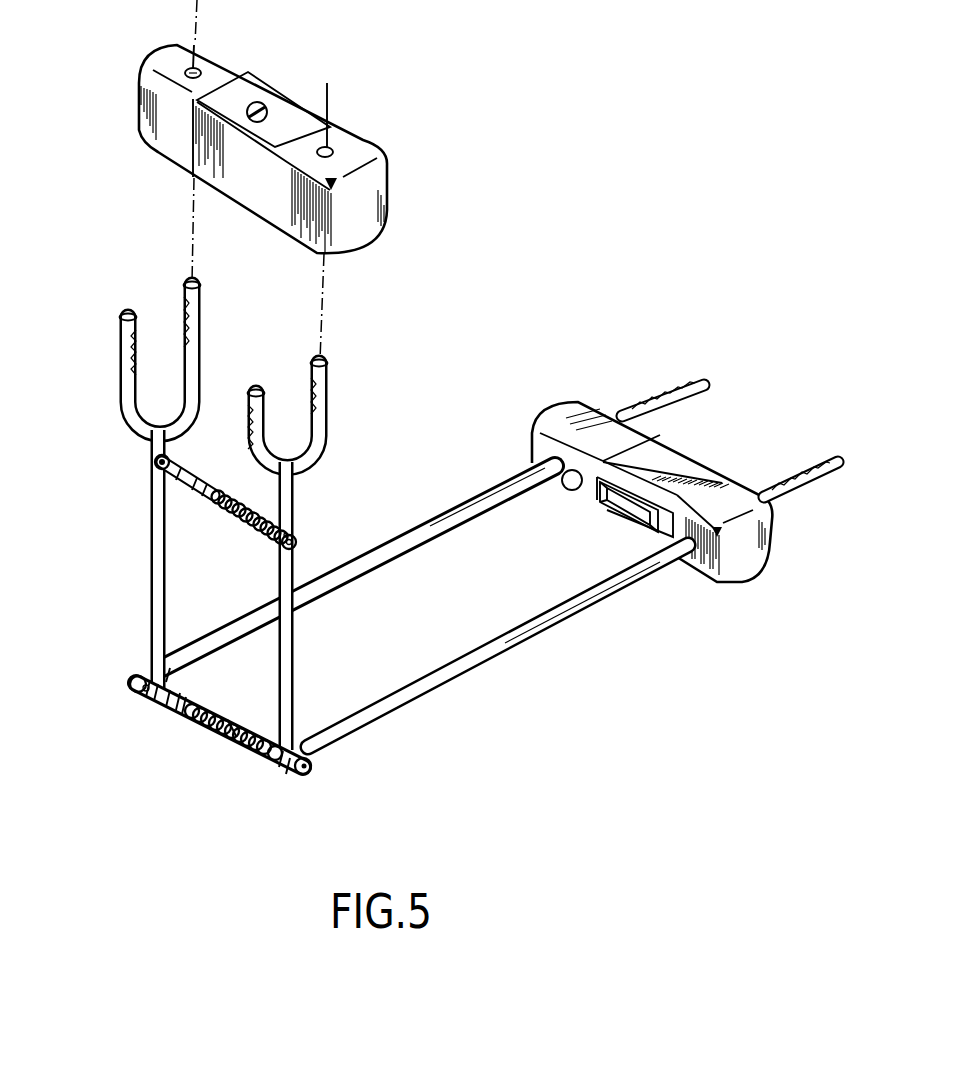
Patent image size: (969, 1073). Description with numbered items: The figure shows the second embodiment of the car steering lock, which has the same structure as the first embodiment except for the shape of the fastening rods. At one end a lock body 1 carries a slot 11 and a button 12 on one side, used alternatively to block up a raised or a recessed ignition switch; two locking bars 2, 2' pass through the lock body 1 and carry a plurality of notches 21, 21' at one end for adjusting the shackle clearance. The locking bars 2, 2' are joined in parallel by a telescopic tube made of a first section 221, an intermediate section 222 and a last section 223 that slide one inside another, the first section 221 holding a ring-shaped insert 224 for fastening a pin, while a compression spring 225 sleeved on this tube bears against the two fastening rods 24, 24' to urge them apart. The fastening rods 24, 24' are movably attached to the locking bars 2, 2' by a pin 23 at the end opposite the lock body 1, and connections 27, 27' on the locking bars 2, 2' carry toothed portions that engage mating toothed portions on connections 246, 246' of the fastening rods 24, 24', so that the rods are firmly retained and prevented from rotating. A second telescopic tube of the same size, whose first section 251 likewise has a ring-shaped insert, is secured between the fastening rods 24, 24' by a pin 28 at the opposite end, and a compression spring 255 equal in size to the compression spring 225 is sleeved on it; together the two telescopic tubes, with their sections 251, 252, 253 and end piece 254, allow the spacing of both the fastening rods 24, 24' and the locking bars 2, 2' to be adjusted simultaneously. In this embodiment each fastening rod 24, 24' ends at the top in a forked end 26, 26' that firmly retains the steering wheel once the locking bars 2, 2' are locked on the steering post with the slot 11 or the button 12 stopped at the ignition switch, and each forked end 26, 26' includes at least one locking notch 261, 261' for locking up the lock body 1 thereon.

The lock body 1 is at (347, 129).
The locking bar 2 is at (498, 646).
The locking bar 2' is at (358, 563).
The slot 11 is at (610, 528).
The button 12 is at (572, 491).
The notches 21 is at (801, 427).
The notches 21' is at (663, 358).
The pin 23 is at (309, 770).
The fastening rod 24 is at (320, 606).
The fastening rod 24' is at (111, 560).
The forked end 26 is at (322, 406).
The forked end 26' is at (160, 328).
The connection 27 is at (296, 804).
The connection 27' is at (169, 699).
The pin 28 is at (294, 530).
The first section 221 is at (187, 718).
The intermediate section 222 is at (220, 738).
The last section 223 is at (257, 755).
The ring-shaped insert 224 is at (173, 673).
The compression spring 225 is at (234, 718).
The connection 246 is at (244, 790).
The connection 246' is at (78, 690).
The first section 251 is at (198, 489).
The coil spring 252 is at (230, 514).
The ring 253 is at (262, 540).
The knob 254 is at (154, 463).
The compression spring 255 is at (246, 488).
The locking notch 261 is at (285, 361).
The locking notch 261' is at (226, 298).